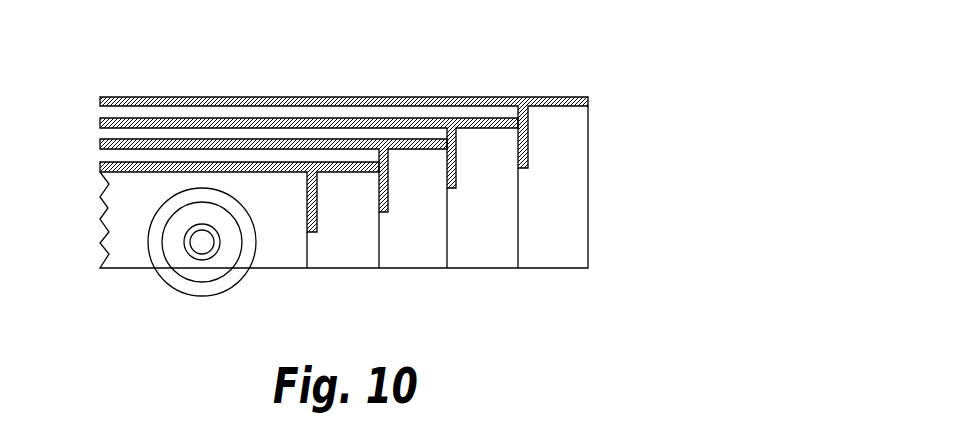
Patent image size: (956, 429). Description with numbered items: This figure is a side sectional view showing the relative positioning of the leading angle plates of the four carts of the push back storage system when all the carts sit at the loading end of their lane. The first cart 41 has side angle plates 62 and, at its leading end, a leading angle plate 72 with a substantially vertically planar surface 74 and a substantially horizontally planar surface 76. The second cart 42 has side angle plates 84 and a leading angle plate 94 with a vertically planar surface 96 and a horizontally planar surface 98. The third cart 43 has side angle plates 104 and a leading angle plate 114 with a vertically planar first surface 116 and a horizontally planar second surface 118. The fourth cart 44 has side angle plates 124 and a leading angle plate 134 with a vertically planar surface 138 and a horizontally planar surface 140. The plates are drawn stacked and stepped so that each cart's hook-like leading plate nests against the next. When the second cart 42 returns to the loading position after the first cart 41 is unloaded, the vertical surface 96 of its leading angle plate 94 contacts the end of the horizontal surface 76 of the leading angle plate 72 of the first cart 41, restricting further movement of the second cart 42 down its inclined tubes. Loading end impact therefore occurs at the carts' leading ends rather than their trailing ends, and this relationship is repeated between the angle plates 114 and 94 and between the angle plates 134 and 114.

The first cart 41 is at (323, 162).
The second cart 42 is at (382, 118).
The third cart 43 is at (438, 118).
The fourth cart 44 is at (508, 98).
The side angle plate 62 is at (287, 175).
The leading angle plate 72 is at (334, 182).
The vertically planar surface 74 is at (317, 200).
The horizontally planar surface 76 is at (361, 173).
The side angle plate 84 is at (232, 140).
The leading angle plate 94 is at (403, 163).
The vertically planar surface 96 is at (388, 182).
The horizontally planar surface 98 is at (433, 149).
The side angle plate 104 is at (318, 137).
The leading angle plate 114 is at (473, 142).
The vertically planar first surface 116 is at (456, 157).
The horizontally planar second surface 118 is at (505, 130).
The side angle plate 124 is at (412, 98).
The leading angle plate 134 is at (550, 113).
The vertically planar surface 138 is at (527, 152).
The horizontally planar surface 140 is at (577, 108).